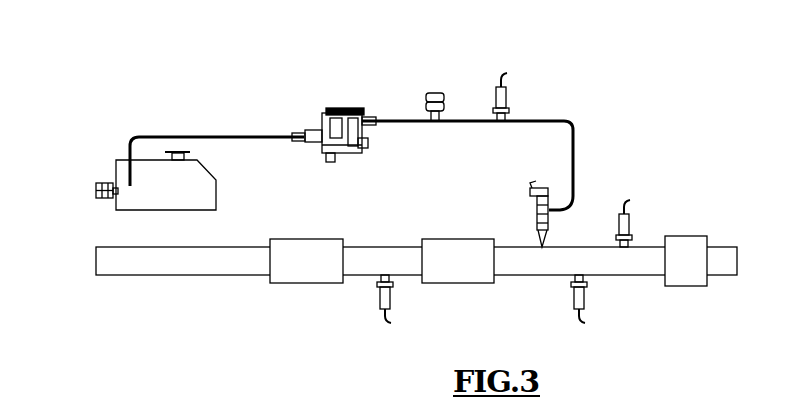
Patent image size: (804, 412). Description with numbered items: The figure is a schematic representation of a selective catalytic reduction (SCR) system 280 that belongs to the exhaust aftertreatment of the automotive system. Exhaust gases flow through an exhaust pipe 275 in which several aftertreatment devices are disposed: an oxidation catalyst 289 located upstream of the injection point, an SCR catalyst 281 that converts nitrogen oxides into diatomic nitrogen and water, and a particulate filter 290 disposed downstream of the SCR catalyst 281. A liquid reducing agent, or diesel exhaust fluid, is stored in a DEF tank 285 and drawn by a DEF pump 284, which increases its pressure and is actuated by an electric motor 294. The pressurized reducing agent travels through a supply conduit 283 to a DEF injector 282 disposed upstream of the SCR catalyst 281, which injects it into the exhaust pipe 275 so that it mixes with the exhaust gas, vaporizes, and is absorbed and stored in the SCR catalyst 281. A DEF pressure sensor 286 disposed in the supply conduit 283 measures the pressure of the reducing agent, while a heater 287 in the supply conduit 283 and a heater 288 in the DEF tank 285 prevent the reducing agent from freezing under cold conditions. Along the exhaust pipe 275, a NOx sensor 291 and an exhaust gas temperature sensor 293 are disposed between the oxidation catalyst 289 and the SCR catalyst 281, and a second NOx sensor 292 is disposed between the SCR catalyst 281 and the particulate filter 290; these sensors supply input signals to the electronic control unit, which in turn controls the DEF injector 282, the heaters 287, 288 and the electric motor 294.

The exhaust pipe 275 is at (199, 262).
The selective catalytic reduction (SCR) system 280 is at (196, 105).
The SCR catalyst 281 is at (455, 267).
The DEF injector 282 is at (550, 210).
The supply conduit 283 is at (551, 120).
The DEF pump 284 is at (337, 110).
The DEF tank 285 is at (186, 183).
The DEF pressure sensor 286 is at (506, 94).
The heater 287 is at (432, 93).
The heater 288 is at (96, 186).
The oxidation catalyst 289 is at (687, 271).
The particulate filter 290 is at (297, 263).
The NOx sensor 291 is at (630, 221).
The NOx sensor 292 is at (383, 300).
The exhaust gas temperature sensor 293 is at (585, 300).
The electric motor 294 is at (368, 147).